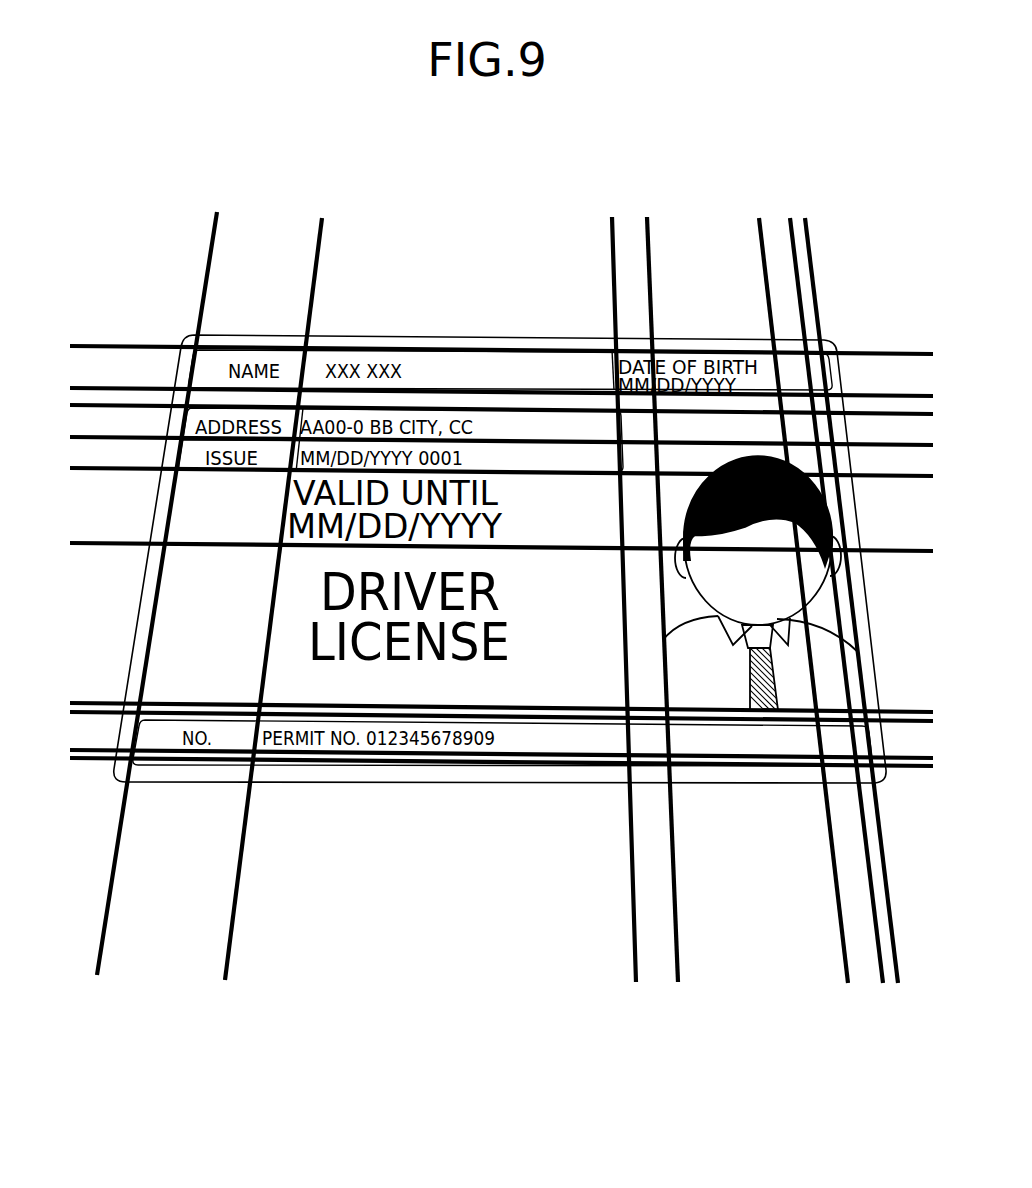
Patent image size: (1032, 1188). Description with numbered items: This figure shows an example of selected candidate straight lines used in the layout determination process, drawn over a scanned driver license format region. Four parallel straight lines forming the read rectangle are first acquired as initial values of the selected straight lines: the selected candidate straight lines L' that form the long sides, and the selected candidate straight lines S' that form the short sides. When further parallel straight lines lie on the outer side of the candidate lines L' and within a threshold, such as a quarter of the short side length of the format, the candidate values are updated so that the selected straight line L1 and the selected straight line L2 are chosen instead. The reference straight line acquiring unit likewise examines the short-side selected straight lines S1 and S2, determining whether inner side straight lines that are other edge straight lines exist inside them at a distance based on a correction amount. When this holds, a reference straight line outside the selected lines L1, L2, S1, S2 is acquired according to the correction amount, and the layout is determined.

The selected candidate straight lines forming short sides S' is at (494, 596).
The selected straight line S1 is at (105, 957).
The selected straight line S2 is at (897, 980).
The selected candidate straight lines forming long sides L' is at (475, 574).
The selected straight line L1 is at (893, 353).
The selected straight line L2 is at (917, 771).